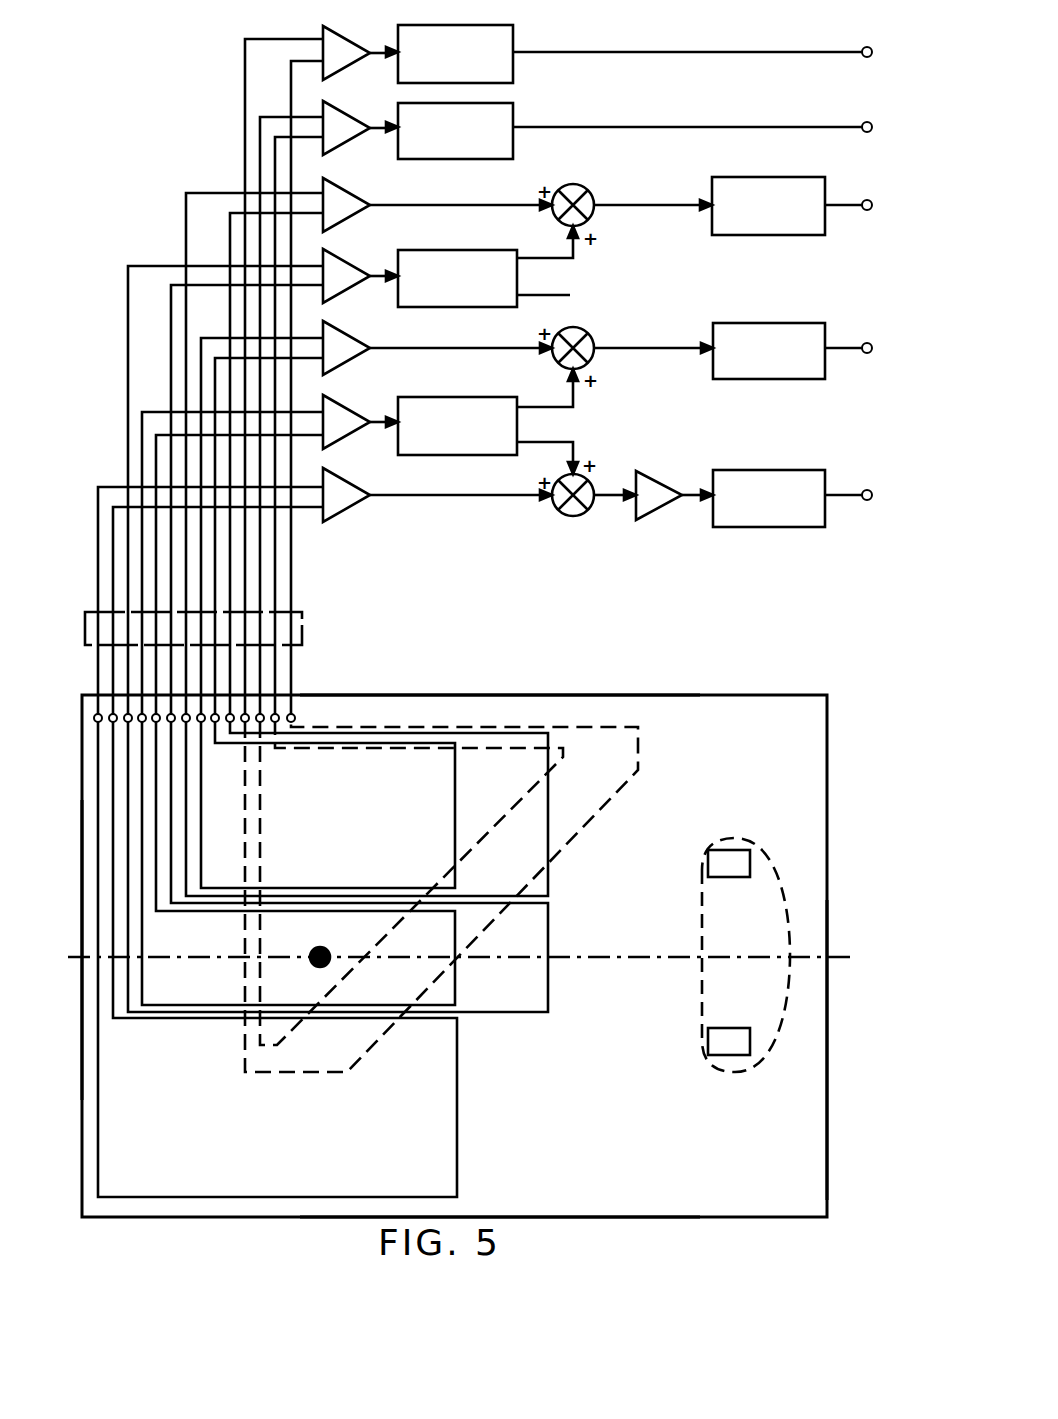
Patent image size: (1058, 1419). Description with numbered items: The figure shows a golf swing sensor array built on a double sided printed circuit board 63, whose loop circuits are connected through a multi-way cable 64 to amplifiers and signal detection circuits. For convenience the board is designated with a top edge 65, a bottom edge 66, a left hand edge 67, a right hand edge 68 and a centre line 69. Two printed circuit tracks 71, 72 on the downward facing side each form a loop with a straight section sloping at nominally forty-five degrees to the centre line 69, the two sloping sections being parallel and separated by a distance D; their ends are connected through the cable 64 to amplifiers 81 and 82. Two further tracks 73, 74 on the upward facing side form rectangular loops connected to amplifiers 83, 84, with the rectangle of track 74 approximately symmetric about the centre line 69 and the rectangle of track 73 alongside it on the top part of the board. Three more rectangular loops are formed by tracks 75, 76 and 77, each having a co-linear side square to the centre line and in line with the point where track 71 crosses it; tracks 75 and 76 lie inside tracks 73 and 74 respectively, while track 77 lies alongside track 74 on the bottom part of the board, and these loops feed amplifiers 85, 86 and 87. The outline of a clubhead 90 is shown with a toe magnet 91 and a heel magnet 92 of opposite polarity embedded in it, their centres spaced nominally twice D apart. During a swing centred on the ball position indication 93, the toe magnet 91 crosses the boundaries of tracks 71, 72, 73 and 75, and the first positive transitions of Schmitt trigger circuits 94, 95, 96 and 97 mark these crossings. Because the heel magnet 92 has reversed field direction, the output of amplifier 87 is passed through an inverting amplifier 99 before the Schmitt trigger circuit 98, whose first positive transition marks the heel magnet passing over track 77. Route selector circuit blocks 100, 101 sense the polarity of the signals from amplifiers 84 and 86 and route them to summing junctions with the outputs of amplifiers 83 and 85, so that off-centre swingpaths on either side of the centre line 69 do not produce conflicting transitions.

The double sided printed circuit board 63 is at (703, 727).
The multi-way cable 64 is at (306, 630).
The top edge 65 is at (492, 695).
The bottom edge 66 is at (585, 1217).
The left hand edge 67 is at (82, 1027).
The right hand edge 68 is at (827, 1085).
The centre line 69 is at (838, 955).
The printed circuit track 71 is at (612, 790).
The printed circuit track 72 is at (478, 838).
The printed circuit track 73 is at (548, 798).
The printed circuit track 74 is at (548, 987).
The track 75 is at (455, 795).
The track 76 is at (455, 980).
The track 77 is at (457, 1147).
The amplifier 81 is at (340, 57).
The amplifier 82 is at (340, 132).
The amplifier 83 is at (340, 209).
The amplifier 84 is at (340, 280).
The amplifier 85 is at (340, 352).
The amplifier 86 is at (340, 426).
The amplifier 87 is at (340, 499).
The clubhead 90 is at (787, 905).
The toe magnet 91 is at (730, 877).
The heel magnet 92 is at (735, 1028).
The ball position indication 93 is at (328, 950).
The Schmitt trigger circuit 94 is at (515, 40).
The Schmitt trigger circuit 95 is at (515, 112).
The Schmitt trigger circuit 96 is at (760, 177).
The Schmitt trigger circuit 97 is at (752, 323).
The Schmitt trigger circuit 98 is at (757, 470).
The inverting amplifier 99 is at (660, 520).
The route selector circuit block 100 is at (462, 250).
The route selector circuit block 101 is at (450, 397).